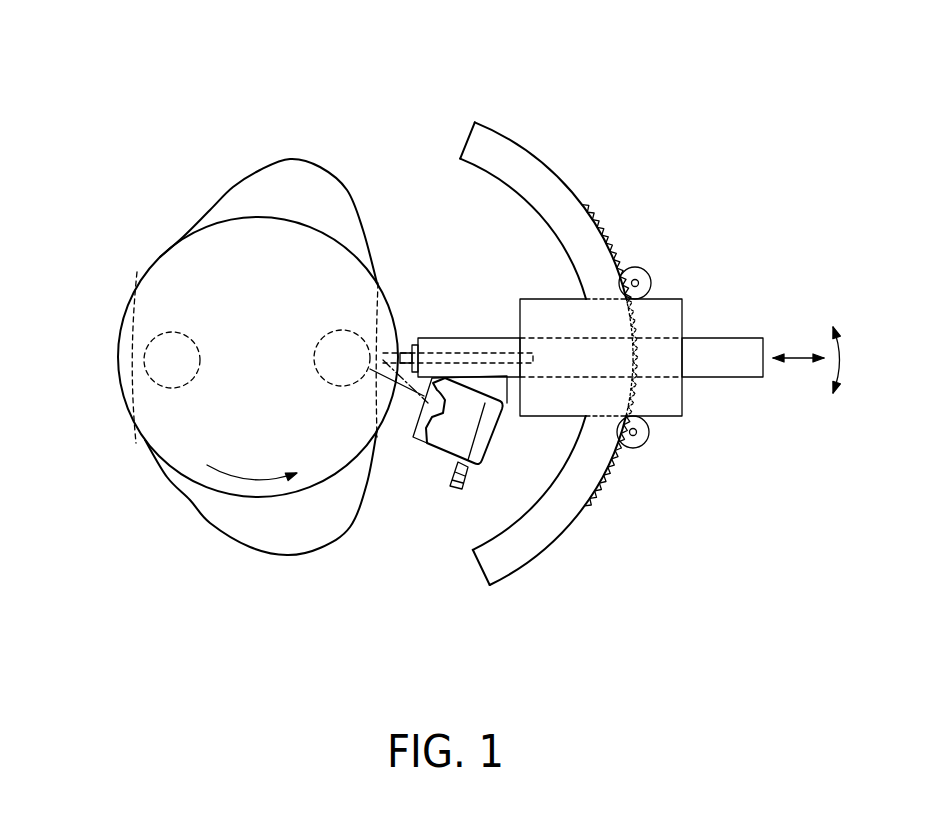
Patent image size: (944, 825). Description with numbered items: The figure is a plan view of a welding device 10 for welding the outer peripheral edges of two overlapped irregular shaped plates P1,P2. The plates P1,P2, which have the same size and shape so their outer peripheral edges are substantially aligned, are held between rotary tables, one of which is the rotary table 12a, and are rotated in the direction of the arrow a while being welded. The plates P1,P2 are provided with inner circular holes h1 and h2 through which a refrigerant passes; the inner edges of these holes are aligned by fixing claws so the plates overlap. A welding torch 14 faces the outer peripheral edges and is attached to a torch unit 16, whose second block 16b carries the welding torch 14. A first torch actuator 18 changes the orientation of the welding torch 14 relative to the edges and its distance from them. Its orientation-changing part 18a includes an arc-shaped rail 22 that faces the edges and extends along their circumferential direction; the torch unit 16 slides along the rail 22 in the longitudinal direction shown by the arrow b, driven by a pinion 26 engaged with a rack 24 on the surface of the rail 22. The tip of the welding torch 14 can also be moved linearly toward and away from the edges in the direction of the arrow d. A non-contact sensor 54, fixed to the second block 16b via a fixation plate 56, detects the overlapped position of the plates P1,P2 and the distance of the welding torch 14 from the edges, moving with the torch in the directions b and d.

The welding device 10 is at (399, 33).
The rotary table 12a is at (183, 240).
The irregular shaped plates P1,P2 is at (262, 173).
The circular hole h1 is at (167, 340).
The circular hole h2 is at (328, 370).
The rotation direction arrow a is at (252, 466).
The welding torch 14 is at (412, 332).
The torch unit 16 is at (662, 287).
The second block 16b is at (742, 338).
The first torch actuator 18 is at (668, 385).
The orientation-changing part 18a is at (645, 466).
The linear movement direction arrow d is at (798, 343).
The rail longitudinal direction arrow b is at (846, 360).
The rail 22 is at (560, 193).
The rack 24 is at (588, 218).
The pinion 26 is at (636, 265).
The non-contact sensor 54 is at (443, 443).
The fixation plate 56 is at (500, 392).